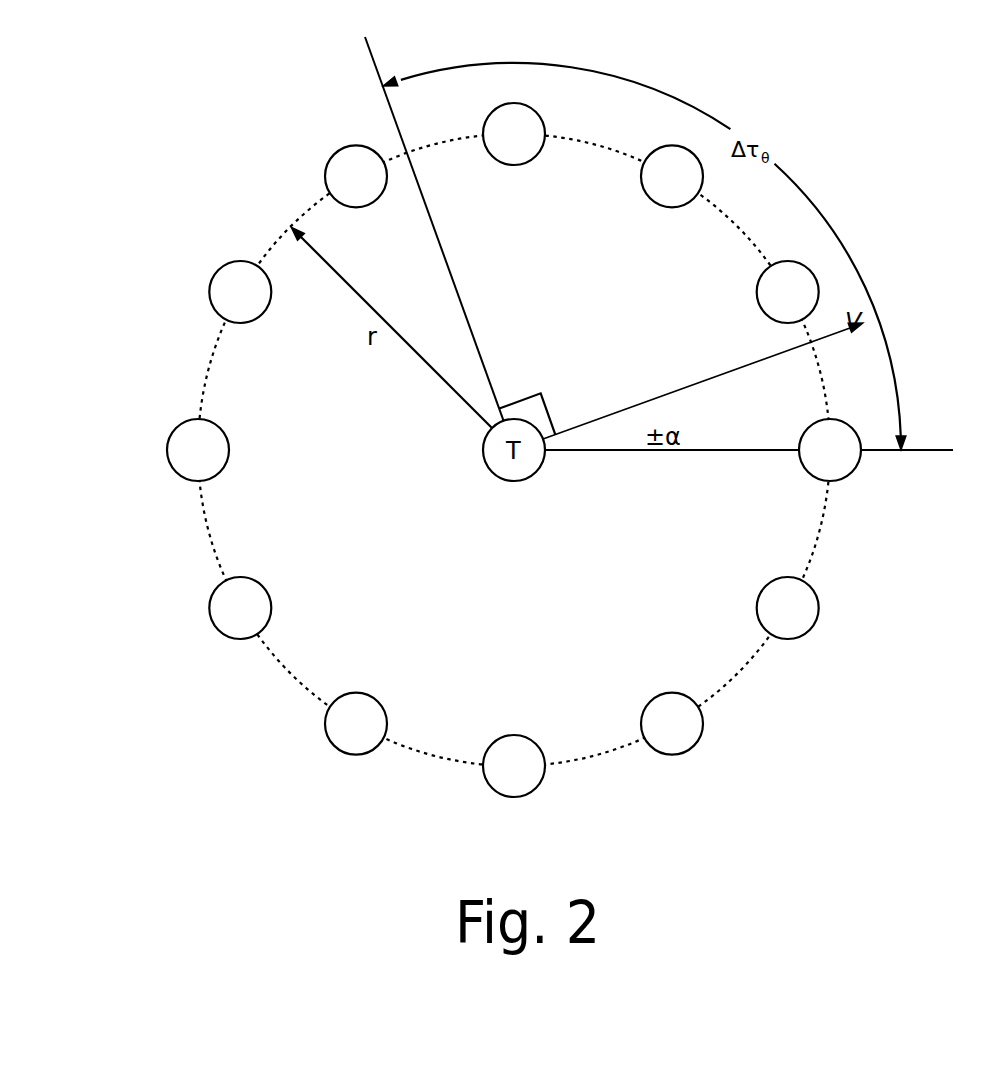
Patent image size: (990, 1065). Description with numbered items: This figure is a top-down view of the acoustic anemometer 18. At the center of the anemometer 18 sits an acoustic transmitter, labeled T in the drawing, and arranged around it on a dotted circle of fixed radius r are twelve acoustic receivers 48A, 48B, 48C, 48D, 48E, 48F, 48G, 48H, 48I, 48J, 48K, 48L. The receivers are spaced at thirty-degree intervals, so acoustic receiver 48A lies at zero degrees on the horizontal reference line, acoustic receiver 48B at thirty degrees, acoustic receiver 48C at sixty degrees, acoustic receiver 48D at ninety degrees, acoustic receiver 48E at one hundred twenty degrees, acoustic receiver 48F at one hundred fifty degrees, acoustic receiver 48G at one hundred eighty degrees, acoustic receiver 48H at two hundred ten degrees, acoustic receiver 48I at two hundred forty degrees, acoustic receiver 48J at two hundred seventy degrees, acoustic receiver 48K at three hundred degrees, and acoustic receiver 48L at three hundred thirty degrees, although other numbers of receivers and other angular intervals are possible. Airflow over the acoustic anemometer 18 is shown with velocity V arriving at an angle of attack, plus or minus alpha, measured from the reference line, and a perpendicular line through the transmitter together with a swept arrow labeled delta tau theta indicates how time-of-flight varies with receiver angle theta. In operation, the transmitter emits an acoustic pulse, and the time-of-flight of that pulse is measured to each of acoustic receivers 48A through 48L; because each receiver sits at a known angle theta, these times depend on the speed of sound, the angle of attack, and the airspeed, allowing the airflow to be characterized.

The acoustic anemometer 18 is at (819, 100).
The acoustic receiver 48A is at (848, 475).
The acoustic receiver 48B is at (760, 304).
The acoustic receiver 48C is at (652, 201).
The acoustic receiver 48D is at (500, 162).
The acoustic receiver 48E is at (338, 150).
The acoustic receiver 48F is at (211, 281).
The acoustic receiver 48G is at (168, 452).
The acoustic receiver 48H is at (209, 608).
The acoustic receiver 48I is at (343, 752).
The acoustic receiver 48J is at (527, 794).
The acoustic receiver 48K is at (694, 746).
The acoustic receiver 48L is at (819, 612).